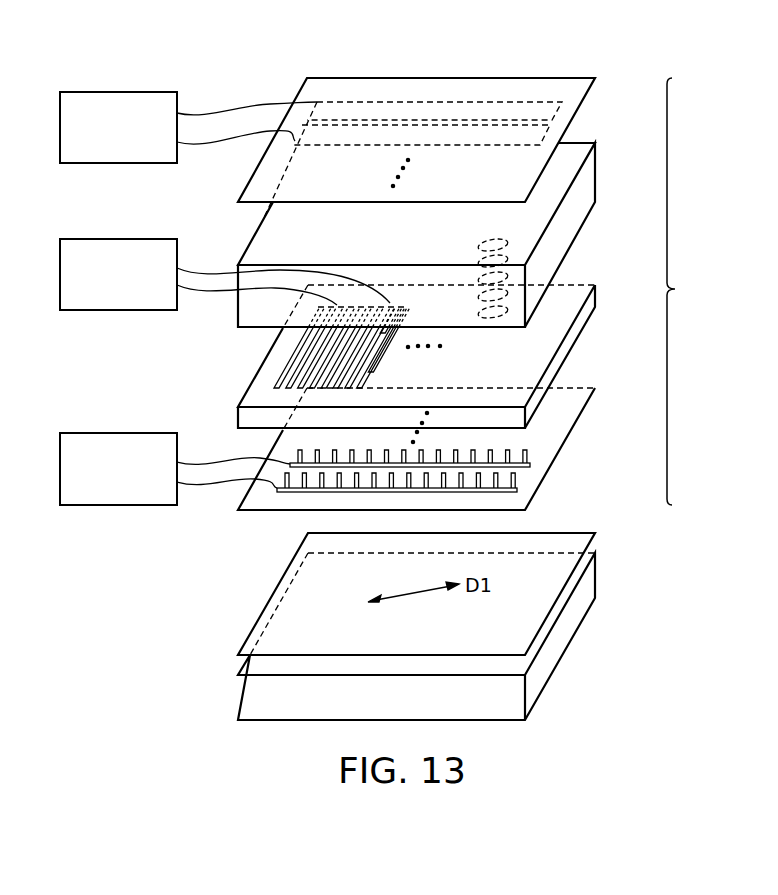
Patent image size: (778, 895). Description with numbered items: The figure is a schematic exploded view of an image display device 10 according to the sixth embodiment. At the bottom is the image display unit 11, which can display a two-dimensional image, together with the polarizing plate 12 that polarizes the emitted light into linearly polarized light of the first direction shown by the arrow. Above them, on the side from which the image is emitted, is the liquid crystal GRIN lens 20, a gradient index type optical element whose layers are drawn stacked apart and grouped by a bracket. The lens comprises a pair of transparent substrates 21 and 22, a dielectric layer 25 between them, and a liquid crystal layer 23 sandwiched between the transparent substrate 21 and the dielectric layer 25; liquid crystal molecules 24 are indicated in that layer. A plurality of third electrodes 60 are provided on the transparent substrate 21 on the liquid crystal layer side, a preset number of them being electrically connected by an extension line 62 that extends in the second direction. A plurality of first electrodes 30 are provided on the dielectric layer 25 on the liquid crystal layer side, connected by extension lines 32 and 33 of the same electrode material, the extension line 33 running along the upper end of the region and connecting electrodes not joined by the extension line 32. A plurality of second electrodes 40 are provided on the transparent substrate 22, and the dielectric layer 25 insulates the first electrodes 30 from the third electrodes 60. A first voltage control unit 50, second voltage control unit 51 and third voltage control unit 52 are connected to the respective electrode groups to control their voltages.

The image display device 10 is at (449, 32).
The image display unit 11 is at (558, 653).
The polarizing plate 12 is at (587, 542).
The liquid crystal GRIN lens 20 is at (687, 291).
The transparent substrate 21 is at (558, 438).
The transparent substrate 22 is at (573, 97).
The liquid crystal layer 23 is at (588, 180).
The liquid crystal molecules 24 is at (507, 242).
The dielectric layer 25 is at (572, 327).
The first electrodes 30 is at (367, 378).
The extension line 32 is at (362, 308).
The extension line 33 is at (410, 306).
The second electrodes 40 is at (550, 122).
The first voltage control unit 50 is at (60, 277).
The second voltage control unit 51 is at (60, 130).
The third voltage control unit 52 is at (60, 472).
The third electrodes 60 is at (513, 478).
The extension line 62 is at (507, 497).